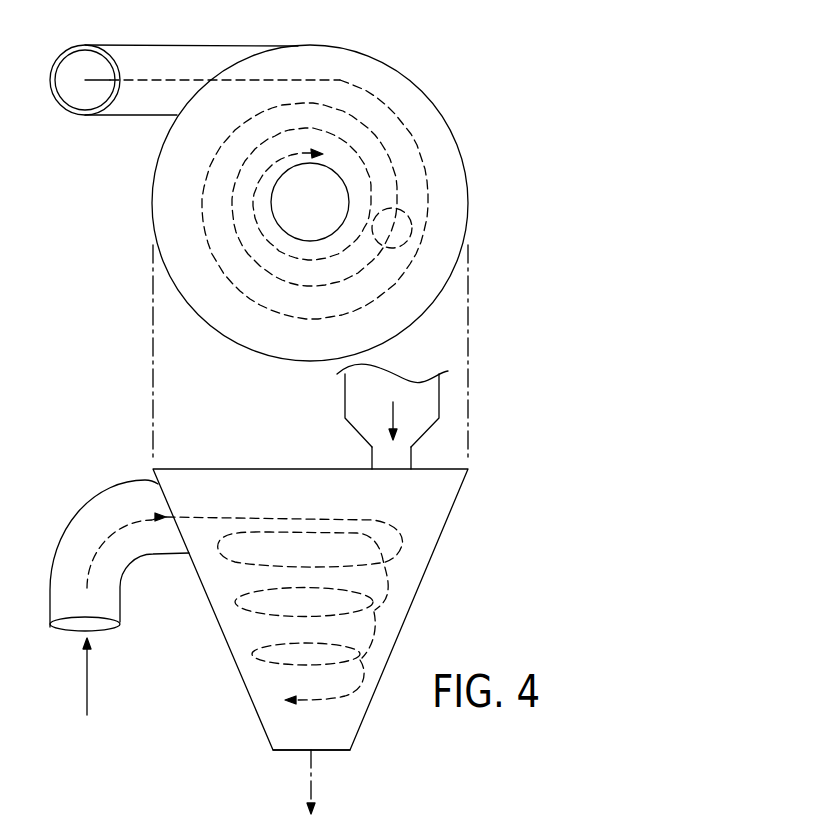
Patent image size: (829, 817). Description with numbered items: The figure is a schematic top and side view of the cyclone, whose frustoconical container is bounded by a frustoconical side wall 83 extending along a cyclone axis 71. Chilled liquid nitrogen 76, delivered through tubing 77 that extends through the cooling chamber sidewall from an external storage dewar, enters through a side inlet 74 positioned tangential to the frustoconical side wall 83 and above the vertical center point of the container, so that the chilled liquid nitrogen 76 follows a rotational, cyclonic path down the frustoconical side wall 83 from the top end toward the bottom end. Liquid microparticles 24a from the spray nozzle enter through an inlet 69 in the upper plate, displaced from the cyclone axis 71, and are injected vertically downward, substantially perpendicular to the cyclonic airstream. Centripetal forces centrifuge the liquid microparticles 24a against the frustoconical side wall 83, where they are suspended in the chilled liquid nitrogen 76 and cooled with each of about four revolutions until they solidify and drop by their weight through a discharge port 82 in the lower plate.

The frustoconical side wall 83 is at (325, 45).
The chilled liquid nitrogen 76 is at (100, 80).
The tubing 77 is at (72, 114).
The side inlet 74 is at (204, 76).
The discharge port 82 is at (330, 190).
The inlet 69 is at (412, 212).
The liquid microparticles 24a is at (393, 415).
The cyclone axis 71 is at (312, 770).